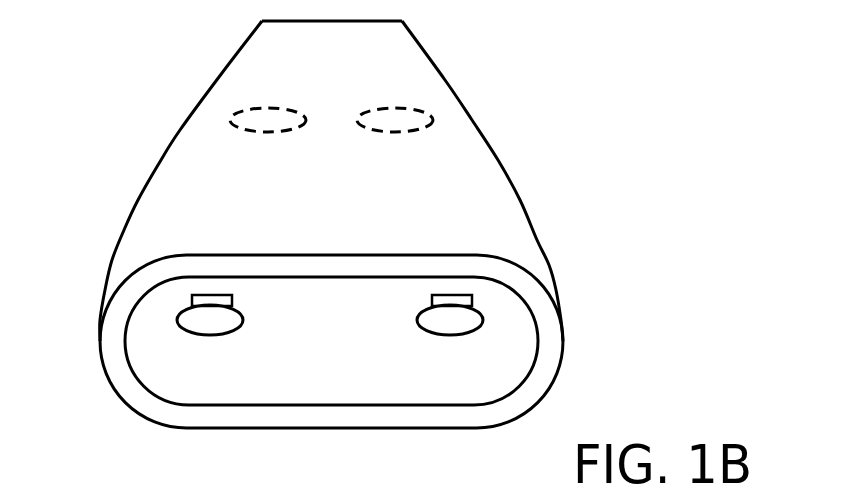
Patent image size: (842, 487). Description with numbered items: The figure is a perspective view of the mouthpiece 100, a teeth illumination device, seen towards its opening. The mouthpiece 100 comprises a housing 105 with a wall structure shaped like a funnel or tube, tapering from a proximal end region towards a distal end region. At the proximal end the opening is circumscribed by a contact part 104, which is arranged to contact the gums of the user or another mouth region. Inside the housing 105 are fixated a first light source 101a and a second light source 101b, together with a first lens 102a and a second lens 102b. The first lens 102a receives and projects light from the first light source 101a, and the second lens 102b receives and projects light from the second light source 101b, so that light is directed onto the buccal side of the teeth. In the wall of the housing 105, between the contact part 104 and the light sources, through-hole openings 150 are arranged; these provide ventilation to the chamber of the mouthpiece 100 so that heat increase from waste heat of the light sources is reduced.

The mouthpiece 100 is at (125, 105).
The first light source 101a is at (212, 293).
The second light source 101b is at (450, 293).
The first lens 102a is at (197, 335).
The second lens 102b is at (458, 335).
The contact part 104 is at (553, 343).
The housing 105 is at (482, 133).
The through-hole opening 150 is at (266, 108).